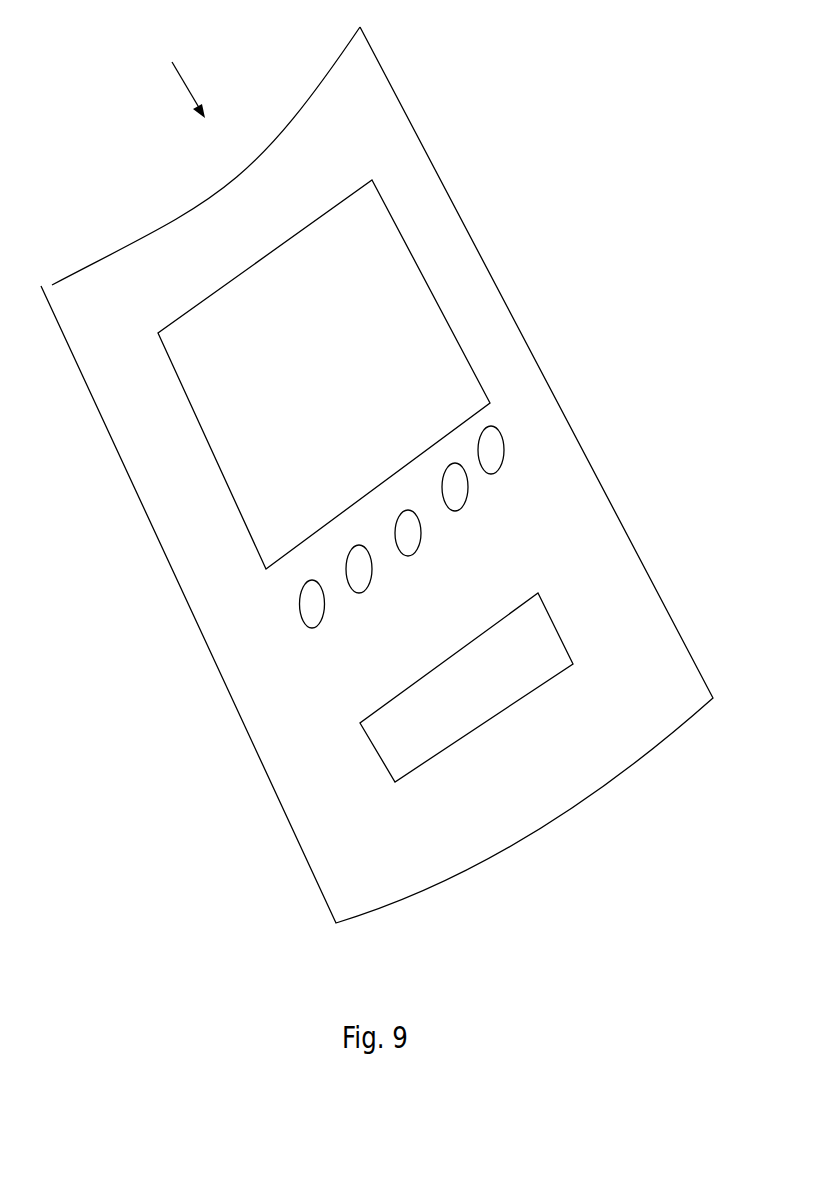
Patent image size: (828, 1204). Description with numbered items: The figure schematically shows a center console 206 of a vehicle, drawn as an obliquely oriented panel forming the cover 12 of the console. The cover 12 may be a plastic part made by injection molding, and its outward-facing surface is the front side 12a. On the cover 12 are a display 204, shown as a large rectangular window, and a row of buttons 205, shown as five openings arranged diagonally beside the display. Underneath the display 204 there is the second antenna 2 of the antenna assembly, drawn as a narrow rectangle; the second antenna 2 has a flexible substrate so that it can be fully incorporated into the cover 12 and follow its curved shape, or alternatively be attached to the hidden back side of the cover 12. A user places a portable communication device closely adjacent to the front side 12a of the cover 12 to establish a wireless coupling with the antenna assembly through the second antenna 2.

The second antenna 2 is at (372, 734).
The cover 12 is at (194, 262).
The front side 12a is at (454, 238).
The display 204 is at (229, 487).
The buttons 205 is at (359, 569).
The center console 206 is at (172, 73).